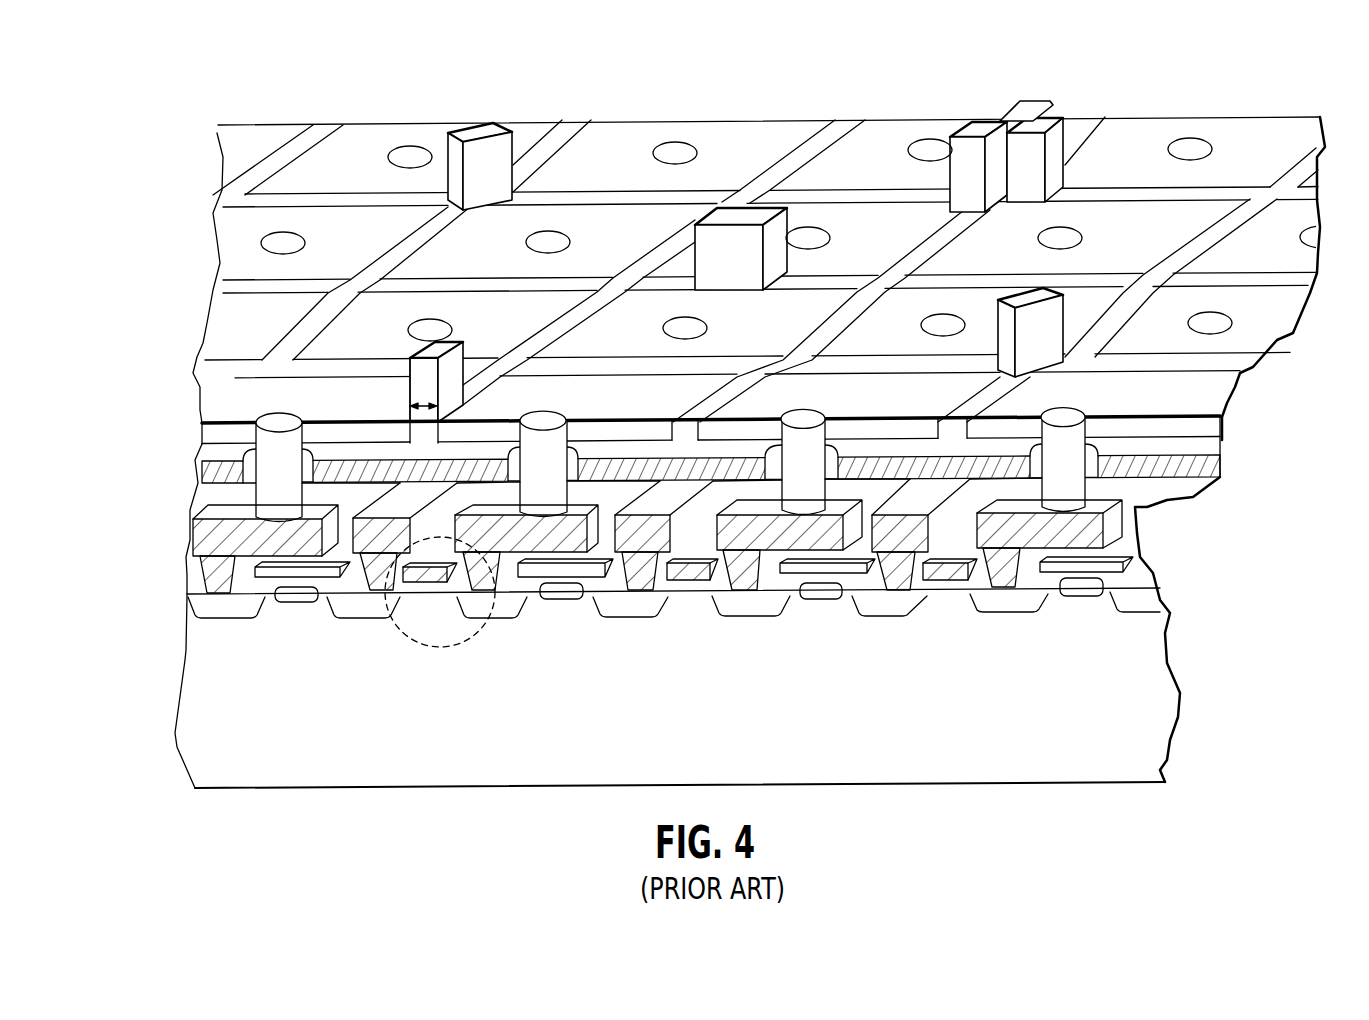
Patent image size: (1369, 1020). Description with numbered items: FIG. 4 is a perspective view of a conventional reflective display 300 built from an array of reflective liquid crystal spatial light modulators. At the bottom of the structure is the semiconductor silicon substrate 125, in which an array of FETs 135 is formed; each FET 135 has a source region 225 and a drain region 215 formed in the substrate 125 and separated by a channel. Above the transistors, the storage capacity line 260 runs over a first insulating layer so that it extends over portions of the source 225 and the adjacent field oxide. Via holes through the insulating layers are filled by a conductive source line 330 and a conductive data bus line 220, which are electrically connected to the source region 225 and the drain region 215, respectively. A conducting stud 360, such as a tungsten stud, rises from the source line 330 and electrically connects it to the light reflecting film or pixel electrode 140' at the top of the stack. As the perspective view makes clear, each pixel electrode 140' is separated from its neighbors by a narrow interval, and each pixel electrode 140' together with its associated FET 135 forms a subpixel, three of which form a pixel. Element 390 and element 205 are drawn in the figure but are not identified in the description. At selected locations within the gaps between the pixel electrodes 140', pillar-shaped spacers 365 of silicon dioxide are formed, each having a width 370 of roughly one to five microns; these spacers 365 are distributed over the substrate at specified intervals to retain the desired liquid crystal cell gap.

The light reflecting film or pixel electrode 140' is at (765, 244).
The holes 390 is at (1193, 140).
The pillar-shaped spacer 365 is at (420, 363).
The width 370 is at (277, 406).
The conducting stud 360 is at (1057, 420).
The reflective display 300 is at (1240, 540).
The conductive data bus line 220 is at (902, 553).
The conductive source line 330 is at (1013, 580).
The FET 135 is at (413, 632).
The storage capacity line 260 is at (573, 580).
The gate electrodes 205 is at (693, 580).
The drain region 215 is at (870, 600).
The source region 225 is at (495, 608).
The substrate 125 is at (873, 745).